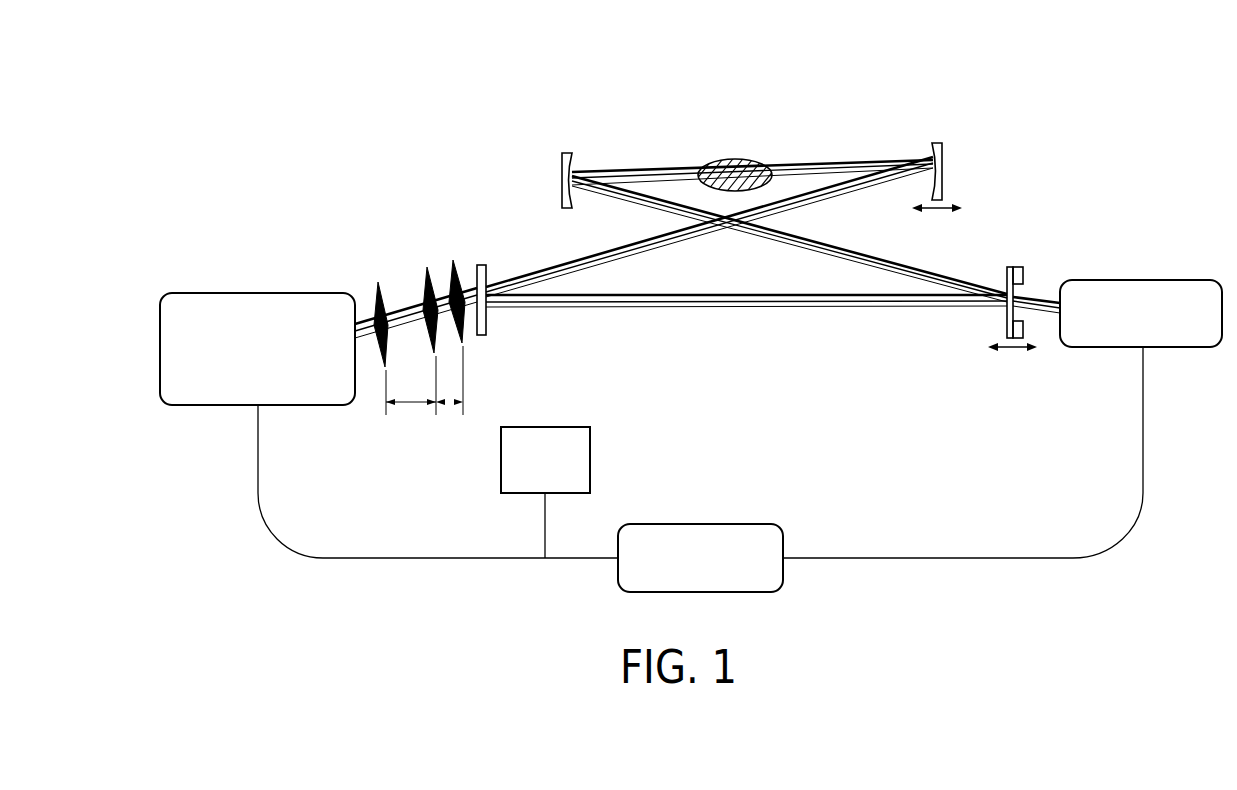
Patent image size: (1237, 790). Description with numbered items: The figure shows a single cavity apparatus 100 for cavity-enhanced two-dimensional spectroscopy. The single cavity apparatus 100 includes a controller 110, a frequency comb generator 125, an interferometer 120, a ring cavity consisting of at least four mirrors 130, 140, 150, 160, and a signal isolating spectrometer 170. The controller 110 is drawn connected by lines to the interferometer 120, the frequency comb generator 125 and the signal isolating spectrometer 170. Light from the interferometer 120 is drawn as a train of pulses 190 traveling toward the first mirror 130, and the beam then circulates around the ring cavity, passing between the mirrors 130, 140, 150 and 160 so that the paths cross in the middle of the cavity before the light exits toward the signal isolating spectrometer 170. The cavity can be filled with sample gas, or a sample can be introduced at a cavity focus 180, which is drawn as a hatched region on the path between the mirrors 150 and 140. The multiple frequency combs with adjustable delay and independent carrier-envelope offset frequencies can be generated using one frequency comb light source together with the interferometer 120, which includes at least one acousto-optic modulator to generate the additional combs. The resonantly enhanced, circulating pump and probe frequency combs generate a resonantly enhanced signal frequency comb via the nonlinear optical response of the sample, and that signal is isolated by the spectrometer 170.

The single cavity apparatus 100 is at (163, 113).
The controller 110 is at (726, 570).
The interferometer 120 is at (282, 365).
The frequency comb generator 125 is at (568, 469).
The mirror 130 is at (486, 330).
The mirror 140 is at (968, 165).
The mirror 150 is at (562, 200).
The mirror 160 is at (988, 331).
The signal isolating spectrometer 170 is at (1166, 322).
The cavity focus 180 is at (727, 140).
The pulse train 190 is at (415, 466).